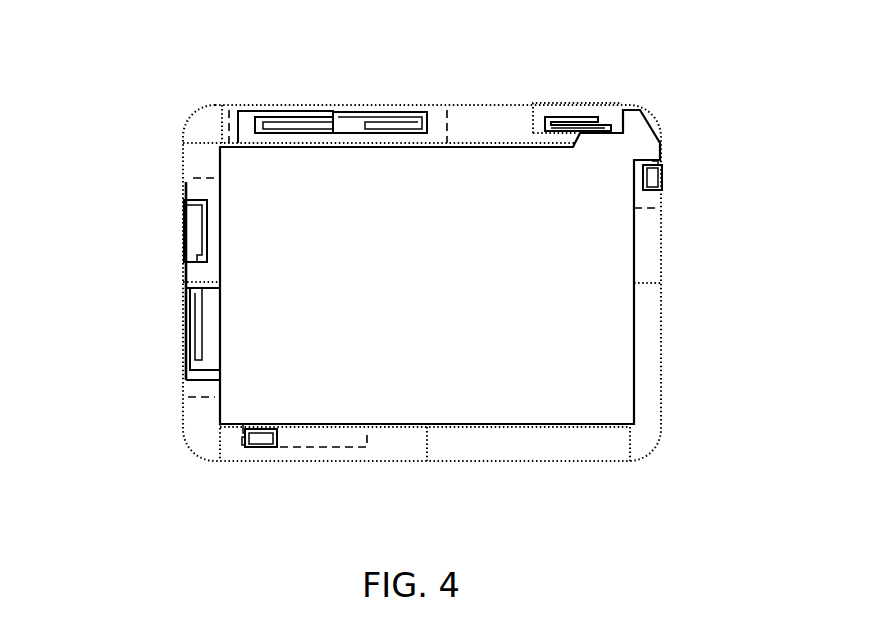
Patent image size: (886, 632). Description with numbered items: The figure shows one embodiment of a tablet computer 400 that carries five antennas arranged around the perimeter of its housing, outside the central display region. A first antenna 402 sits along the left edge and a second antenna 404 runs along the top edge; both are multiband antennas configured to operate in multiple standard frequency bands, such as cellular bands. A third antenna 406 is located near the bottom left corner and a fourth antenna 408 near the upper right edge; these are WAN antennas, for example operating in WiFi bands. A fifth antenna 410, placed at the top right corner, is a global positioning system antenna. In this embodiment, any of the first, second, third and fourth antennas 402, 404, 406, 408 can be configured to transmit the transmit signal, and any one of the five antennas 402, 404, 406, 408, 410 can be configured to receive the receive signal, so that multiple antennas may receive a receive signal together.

The tablet computer 400 is at (568, 47).
The first antenna 402 is at (185, 301).
The second antenna 404 is at (327, 108).
The third antenna 406 is at (270, 447).
The fourth antenna 408 is at (665, 175).
The fifth antenna 410 is at (623, 110).